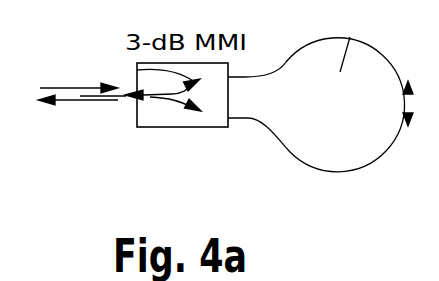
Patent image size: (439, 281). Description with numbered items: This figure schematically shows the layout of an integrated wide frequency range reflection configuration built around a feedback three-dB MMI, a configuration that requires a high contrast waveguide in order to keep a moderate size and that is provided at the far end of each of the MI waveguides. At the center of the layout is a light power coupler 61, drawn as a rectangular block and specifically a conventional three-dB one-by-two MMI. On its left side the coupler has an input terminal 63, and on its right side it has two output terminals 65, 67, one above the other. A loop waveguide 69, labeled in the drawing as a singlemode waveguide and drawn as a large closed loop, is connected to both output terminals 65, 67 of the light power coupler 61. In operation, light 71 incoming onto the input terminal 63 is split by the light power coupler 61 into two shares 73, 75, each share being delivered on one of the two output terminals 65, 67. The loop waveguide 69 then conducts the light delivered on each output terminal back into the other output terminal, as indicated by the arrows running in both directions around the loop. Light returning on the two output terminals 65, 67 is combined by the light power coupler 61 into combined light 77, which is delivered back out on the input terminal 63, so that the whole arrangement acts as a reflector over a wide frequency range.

The light power coupler 61 is at (145, 127).
The input terminal 63 is at (128, 98).
The output terminal 65 is at (234, 74).
The output terminal 67 is at (232, 120).
The loop waveguide 69 is at (305, 158).
The incoming light 71 is at (72, 88).
The share of split light 73 is at (137, 72).
The share of split light 75 is at (191, 108).
The combined light 77 is at (70, 103).